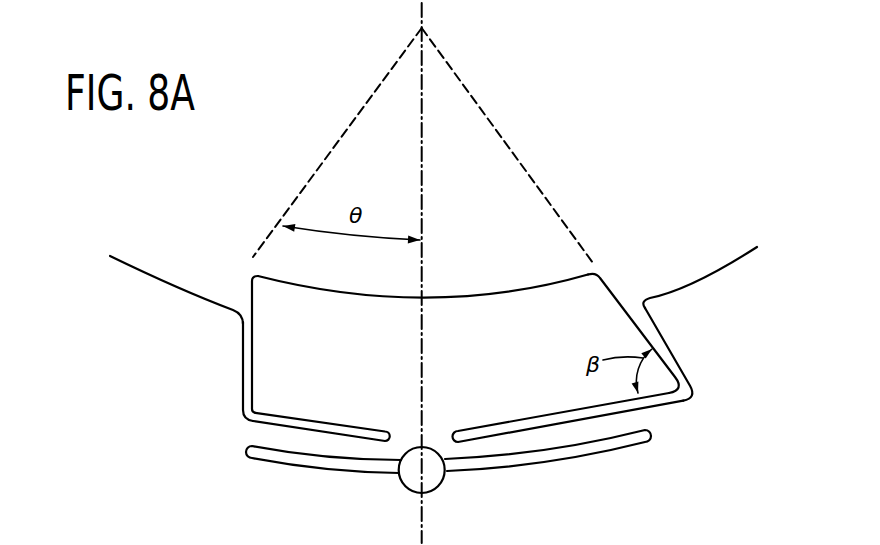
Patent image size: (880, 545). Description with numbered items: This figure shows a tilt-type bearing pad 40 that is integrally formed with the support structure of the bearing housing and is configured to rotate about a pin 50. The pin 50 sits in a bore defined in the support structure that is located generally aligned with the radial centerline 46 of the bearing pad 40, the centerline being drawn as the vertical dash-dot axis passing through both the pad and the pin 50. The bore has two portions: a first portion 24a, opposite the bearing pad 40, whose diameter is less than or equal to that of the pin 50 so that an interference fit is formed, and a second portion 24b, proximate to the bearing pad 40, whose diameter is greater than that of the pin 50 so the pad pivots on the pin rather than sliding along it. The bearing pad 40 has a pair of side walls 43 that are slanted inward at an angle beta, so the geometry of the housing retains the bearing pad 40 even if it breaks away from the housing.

The radial centerline 46 is at (422, 150).
The bearing pad 40 is at (474, 300).
The side walls 43 is at (247, 362).
The second portion of the bore 24b is at (435, 440).
The first portion of the bore 24a is at (440, 485).
The pin 50 is at (407, 480).